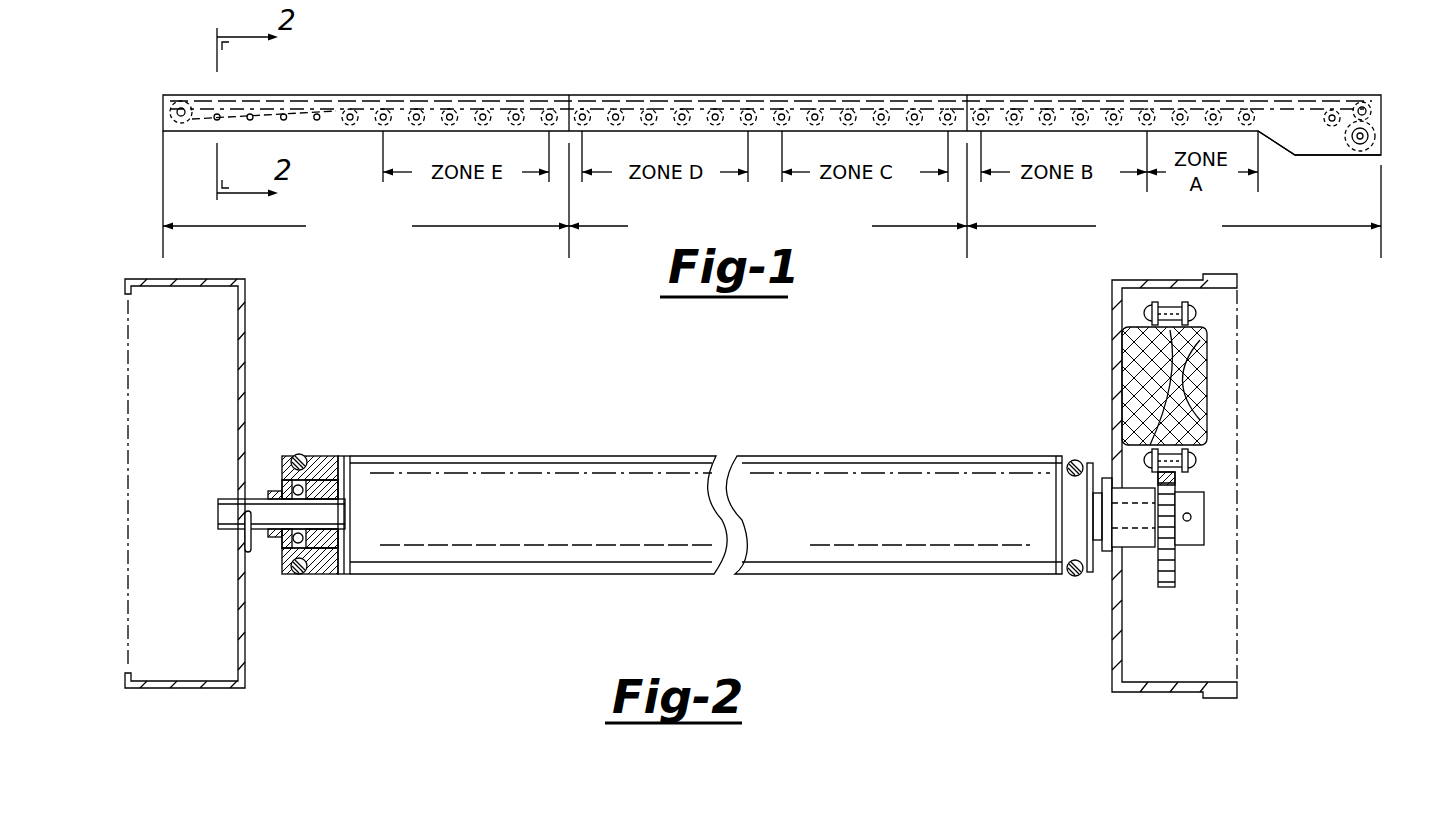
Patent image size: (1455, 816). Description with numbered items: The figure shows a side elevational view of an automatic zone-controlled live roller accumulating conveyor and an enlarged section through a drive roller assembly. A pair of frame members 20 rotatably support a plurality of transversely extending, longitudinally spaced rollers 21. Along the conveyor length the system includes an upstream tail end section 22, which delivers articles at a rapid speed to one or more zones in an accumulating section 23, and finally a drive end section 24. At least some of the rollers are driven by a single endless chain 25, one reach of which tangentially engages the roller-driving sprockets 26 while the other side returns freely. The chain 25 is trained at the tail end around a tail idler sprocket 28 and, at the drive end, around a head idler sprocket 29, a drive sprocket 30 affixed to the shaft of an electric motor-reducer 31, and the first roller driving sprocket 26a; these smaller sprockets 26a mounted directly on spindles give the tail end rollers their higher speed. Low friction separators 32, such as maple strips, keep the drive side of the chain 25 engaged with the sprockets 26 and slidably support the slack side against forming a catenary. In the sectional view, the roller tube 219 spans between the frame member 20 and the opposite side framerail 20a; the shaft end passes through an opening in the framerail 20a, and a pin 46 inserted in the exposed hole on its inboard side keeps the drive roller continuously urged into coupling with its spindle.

In FIG. 2, the frame member 20 is at (1115, 312).
In FIG. 2, the opposite side framerail 20a is at (247, 302).
In FIG. 1, the roller 21 is at (884, 110).
In FIG. 1, the tail end section 22 is at (411, 71).
In FIG. 1, the accumulating section 23 is at (712, 73).
In FIG. 1, the drive end section 24 is at (1115, 73).
In FIG. 1, the endless chain 25 is at (1303, 62).
In FIG. 2, the endless chain 25 is at (1190, 306).
In FIG. 1, the sprocket 26 is at (1334, 112).
In FIG. 2, the first roller driving sprocket 26a is at (1164, 589).
In FIG. 1, the tail idler sprocket 28 is at (182, 108).
In FIG. 1, the head idler sprocket 29 is at (1366, 109).
In FIG. 1, the drive sprocket 30 is at (1366, 136).
In FIG. 1, the electric motor-reducer 31 is at (1382, 156).
In FIG. 2, the low friction separator 32 is at (1190, 385).
In FIG. 2, the pin 46 is at (253, 548).
In FIG. 2, the roller tube 219 is at (840, 457).